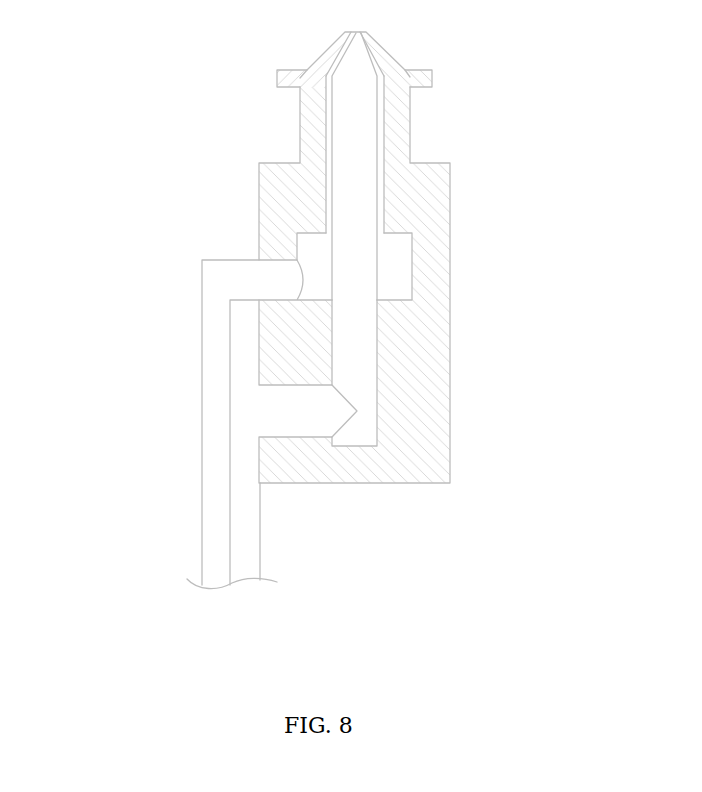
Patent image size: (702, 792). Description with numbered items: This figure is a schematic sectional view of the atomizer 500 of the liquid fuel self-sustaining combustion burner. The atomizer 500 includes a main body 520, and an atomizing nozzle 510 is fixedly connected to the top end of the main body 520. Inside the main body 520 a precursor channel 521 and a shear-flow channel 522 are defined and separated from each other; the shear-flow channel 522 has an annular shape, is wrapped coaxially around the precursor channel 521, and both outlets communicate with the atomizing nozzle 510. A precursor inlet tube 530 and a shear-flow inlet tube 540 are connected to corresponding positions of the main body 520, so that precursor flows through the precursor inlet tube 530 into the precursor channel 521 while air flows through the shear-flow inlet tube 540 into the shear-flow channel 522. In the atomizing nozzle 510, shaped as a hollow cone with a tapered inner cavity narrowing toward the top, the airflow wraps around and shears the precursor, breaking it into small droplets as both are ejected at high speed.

The atomizer 500 is at (192, 150).
The atomizing nozzle 510 is at (317, 68).
The main body 520 is at (443, 255).
The precursor channel 521 is at (360, 220).
The shear-flow channel 522 is at (398, 247).
The precursor inlet tube 530 is at (252, 540).
The shear-flow inlet tube 540 is at (213, 482).